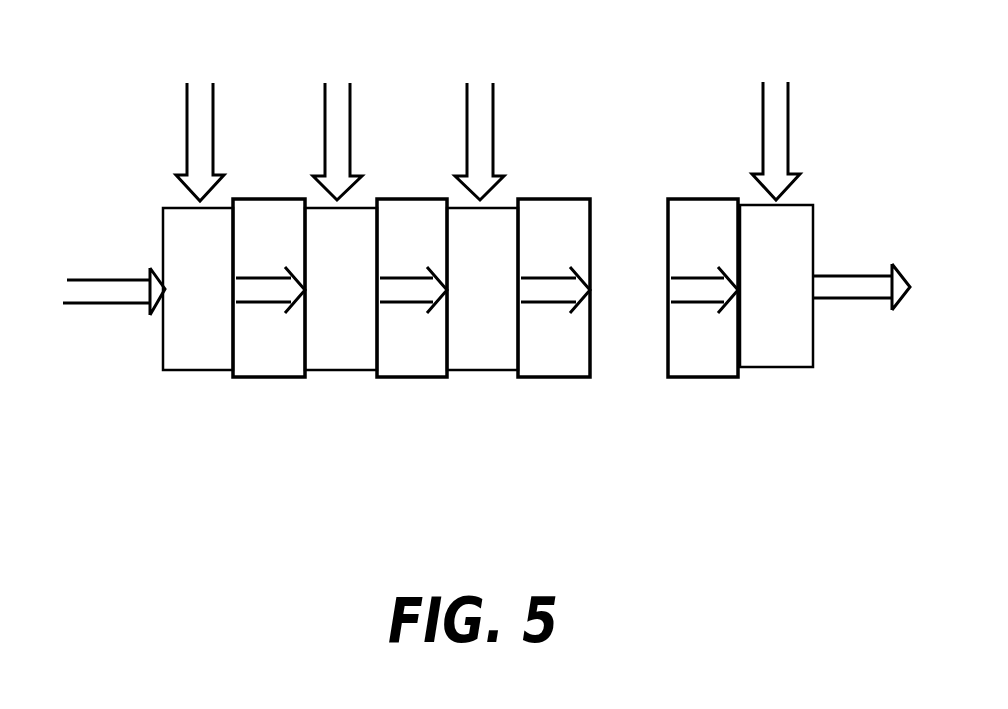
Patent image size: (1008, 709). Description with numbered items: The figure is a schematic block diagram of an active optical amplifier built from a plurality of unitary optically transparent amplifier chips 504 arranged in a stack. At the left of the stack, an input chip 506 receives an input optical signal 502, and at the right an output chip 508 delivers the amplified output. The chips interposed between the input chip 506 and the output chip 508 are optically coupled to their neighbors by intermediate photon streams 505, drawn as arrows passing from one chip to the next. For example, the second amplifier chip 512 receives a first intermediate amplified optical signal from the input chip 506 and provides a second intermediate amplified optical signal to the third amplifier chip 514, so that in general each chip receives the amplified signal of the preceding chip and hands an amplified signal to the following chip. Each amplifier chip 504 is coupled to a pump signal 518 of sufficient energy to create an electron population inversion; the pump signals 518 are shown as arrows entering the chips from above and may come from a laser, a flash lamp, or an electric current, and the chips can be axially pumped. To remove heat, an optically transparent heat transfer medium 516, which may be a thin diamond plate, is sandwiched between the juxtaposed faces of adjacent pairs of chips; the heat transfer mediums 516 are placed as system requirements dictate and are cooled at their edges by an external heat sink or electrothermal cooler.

The input optical signal 502 is at (110, 294).
The unitary optically transparent amplifier chip 504 is at (197, 370).
The intermediate photon stream 505 is at (263, 293).
The input chip 506 is at (173, 310).
The output chip 508 is at (750, 308).
The second amplifier chip 512 is at (317, 310).
The third amplifier chip 514 is at (457, 310).
The optically transparent heat transfer medium 516 is at (402, 198).
The pump signal 518 is at (187, 132).